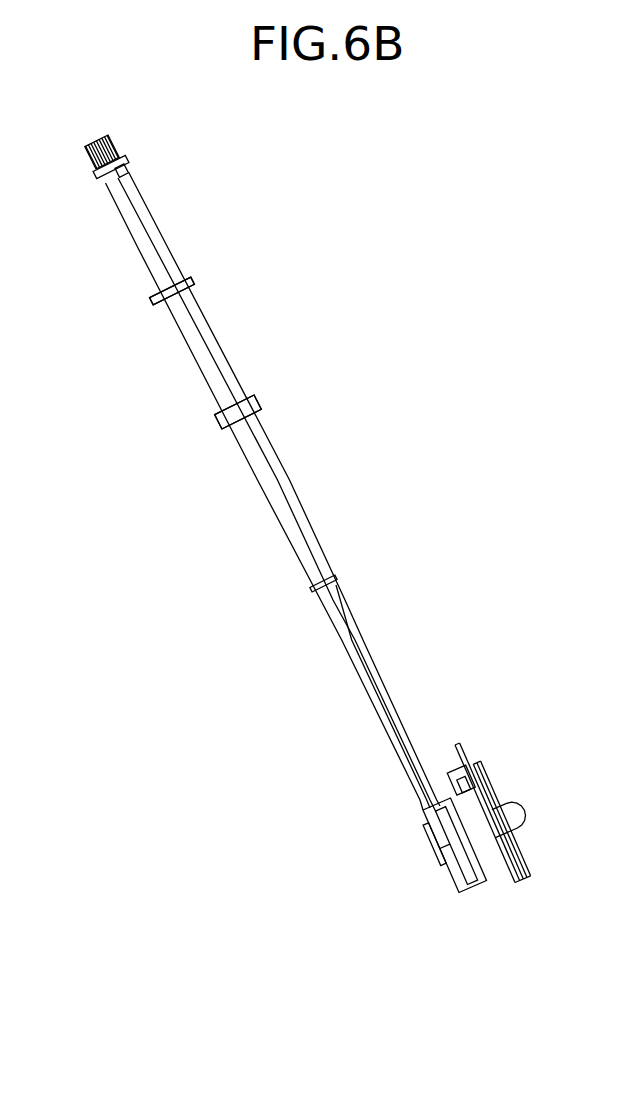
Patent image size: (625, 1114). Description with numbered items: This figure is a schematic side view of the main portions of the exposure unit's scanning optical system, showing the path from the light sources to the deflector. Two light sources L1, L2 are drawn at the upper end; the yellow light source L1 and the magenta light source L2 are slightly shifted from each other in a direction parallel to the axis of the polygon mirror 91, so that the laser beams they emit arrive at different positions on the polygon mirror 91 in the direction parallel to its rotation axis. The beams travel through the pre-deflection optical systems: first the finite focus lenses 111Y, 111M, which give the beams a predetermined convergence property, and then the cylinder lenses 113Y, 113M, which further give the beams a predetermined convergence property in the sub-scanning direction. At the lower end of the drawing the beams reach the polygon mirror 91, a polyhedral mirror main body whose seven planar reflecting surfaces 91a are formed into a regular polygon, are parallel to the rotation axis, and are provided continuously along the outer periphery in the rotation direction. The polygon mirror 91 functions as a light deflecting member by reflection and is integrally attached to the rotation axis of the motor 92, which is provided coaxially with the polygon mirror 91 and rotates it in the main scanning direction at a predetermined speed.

The light source L1 is at (122, 157).
The light source L2 is at (94, 176).
The finite focus lens 111Y is at (193, 280).
The finite focus lens 111M is at (151, 301).
The cylinder lens 113Y is at (257, 400).
The cylinder lens 113M is at (215, 428).
The polygon mirror 91 is at (423, 811).
The reflecting surfaces 91a is at (478, 888).
The motor 92 is at (503, 878).